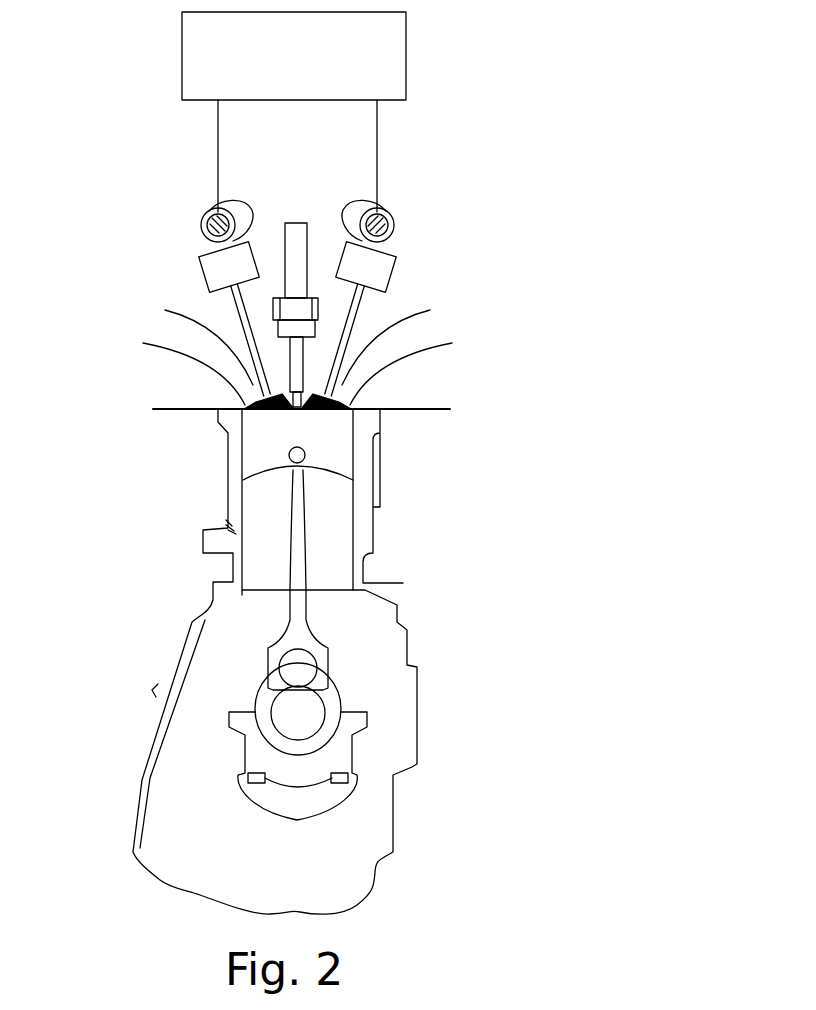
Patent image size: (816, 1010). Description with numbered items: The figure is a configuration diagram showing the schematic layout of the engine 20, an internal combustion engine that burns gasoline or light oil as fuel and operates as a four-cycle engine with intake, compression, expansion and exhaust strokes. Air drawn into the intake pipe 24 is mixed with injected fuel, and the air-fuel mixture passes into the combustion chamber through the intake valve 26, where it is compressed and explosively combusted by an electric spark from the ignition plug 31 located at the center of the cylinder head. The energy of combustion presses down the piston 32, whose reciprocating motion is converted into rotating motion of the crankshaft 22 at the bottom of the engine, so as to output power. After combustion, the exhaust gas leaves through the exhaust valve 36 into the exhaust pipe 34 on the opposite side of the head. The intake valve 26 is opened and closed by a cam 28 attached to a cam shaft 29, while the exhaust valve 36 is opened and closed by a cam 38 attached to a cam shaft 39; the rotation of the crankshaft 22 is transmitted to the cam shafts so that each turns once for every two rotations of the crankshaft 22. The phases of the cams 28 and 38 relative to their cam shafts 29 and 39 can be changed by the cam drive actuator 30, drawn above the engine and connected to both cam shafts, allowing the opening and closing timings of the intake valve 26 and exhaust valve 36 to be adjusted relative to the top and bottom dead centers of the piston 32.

The engine 20 is at (98, 75).
The crankshaft 22 is at (322, 696).
The intake pipe 24 is at (203, 347).
The intake valve 26 is at (240, 398).
The cam 28 is at (208, 212).
The cam shaft 29 is at (204, 222).
The cam drive actuator 30 is at (406, 50).
The ignition plug 31 is at (292, 222).
The piston 32 is at (330, 452).
The exhaust pipe 34 is at (425, 347).
The exhaust valve 36 is at (355, 398).
The cam 38 is at (388, 212).
The cam shaft 39 is at (395, 222).